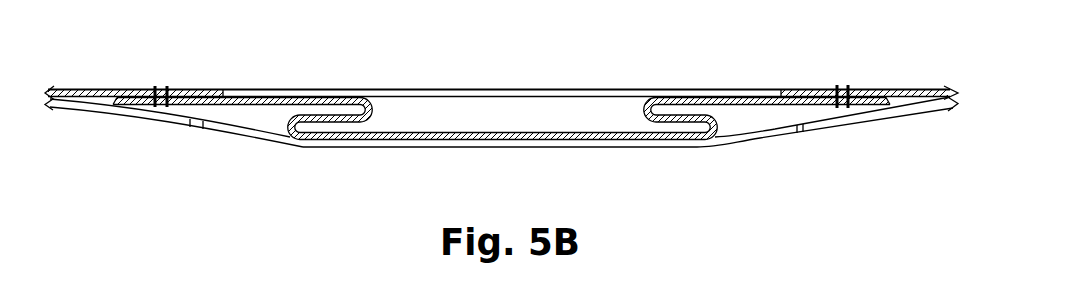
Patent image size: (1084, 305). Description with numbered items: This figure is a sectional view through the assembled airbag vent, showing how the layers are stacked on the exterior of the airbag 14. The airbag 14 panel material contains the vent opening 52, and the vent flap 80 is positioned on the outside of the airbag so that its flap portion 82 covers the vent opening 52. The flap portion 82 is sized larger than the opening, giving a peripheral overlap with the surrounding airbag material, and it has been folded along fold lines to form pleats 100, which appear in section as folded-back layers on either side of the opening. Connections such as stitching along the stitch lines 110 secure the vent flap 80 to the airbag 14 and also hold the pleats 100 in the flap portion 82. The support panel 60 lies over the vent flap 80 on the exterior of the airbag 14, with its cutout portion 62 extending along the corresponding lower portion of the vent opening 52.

The airbag 14 is at (102, 90).
The vent opening 52 is at (487, 95).
The support panel 60 is at (190, 130).
The cutout portion 62 is at (430, 143).
The vent flap 80 is at (501, 160).
The flap portion 82 is at (513, 134).
The pleats 100 is at (315, 133).
The stitch lines 110 is at (155, 87).